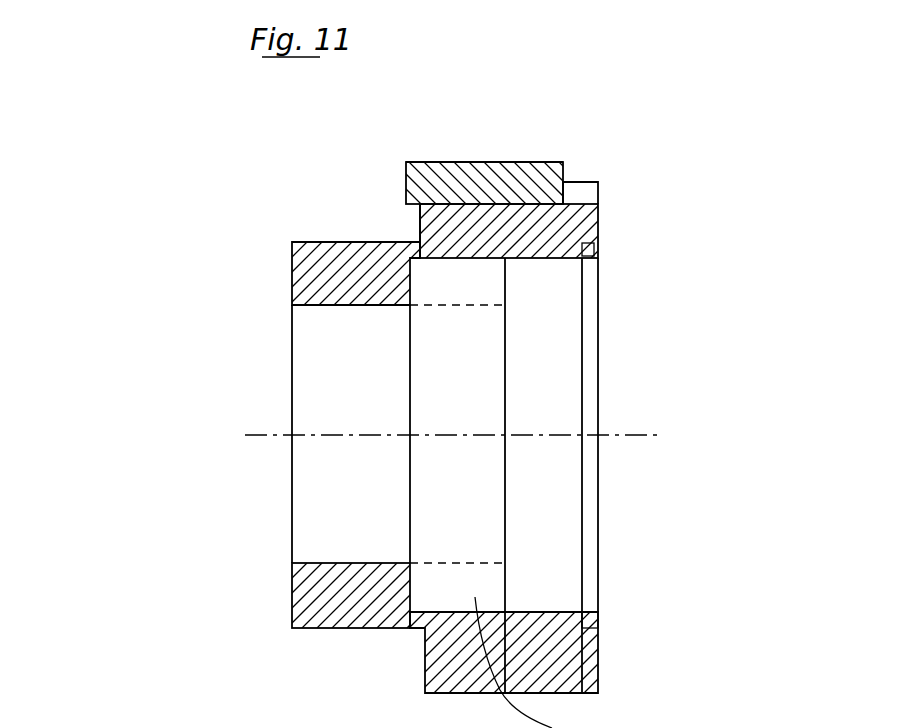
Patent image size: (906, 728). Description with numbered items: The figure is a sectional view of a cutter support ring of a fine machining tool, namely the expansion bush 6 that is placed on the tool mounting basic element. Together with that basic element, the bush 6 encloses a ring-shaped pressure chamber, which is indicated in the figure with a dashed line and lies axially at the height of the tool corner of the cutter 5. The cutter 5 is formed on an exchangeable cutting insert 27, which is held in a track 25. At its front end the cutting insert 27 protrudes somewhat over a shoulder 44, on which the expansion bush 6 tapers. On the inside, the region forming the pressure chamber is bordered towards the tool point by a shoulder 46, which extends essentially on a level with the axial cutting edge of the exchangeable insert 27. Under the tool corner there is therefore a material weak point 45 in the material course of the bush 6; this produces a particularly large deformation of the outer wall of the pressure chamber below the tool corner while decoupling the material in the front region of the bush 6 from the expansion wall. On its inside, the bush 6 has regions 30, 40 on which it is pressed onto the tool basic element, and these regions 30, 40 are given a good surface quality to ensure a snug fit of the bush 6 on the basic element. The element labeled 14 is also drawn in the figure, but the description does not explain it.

The cutter 5 is at (443, 161).
The bush 6 is at (252, 248).
The securing ring 14 is at (594, 250).
The track 25 is at (568, 183).
The exchangeable cutting insert 27 is at (424, 200).
The region 30 is at (546, 609).
The region 40 is at (365, 558).
The shoulder 44 is at (416, 218).
The material weak point 45 is at (413, 242).
The shoulder 46 is at (393, 597).